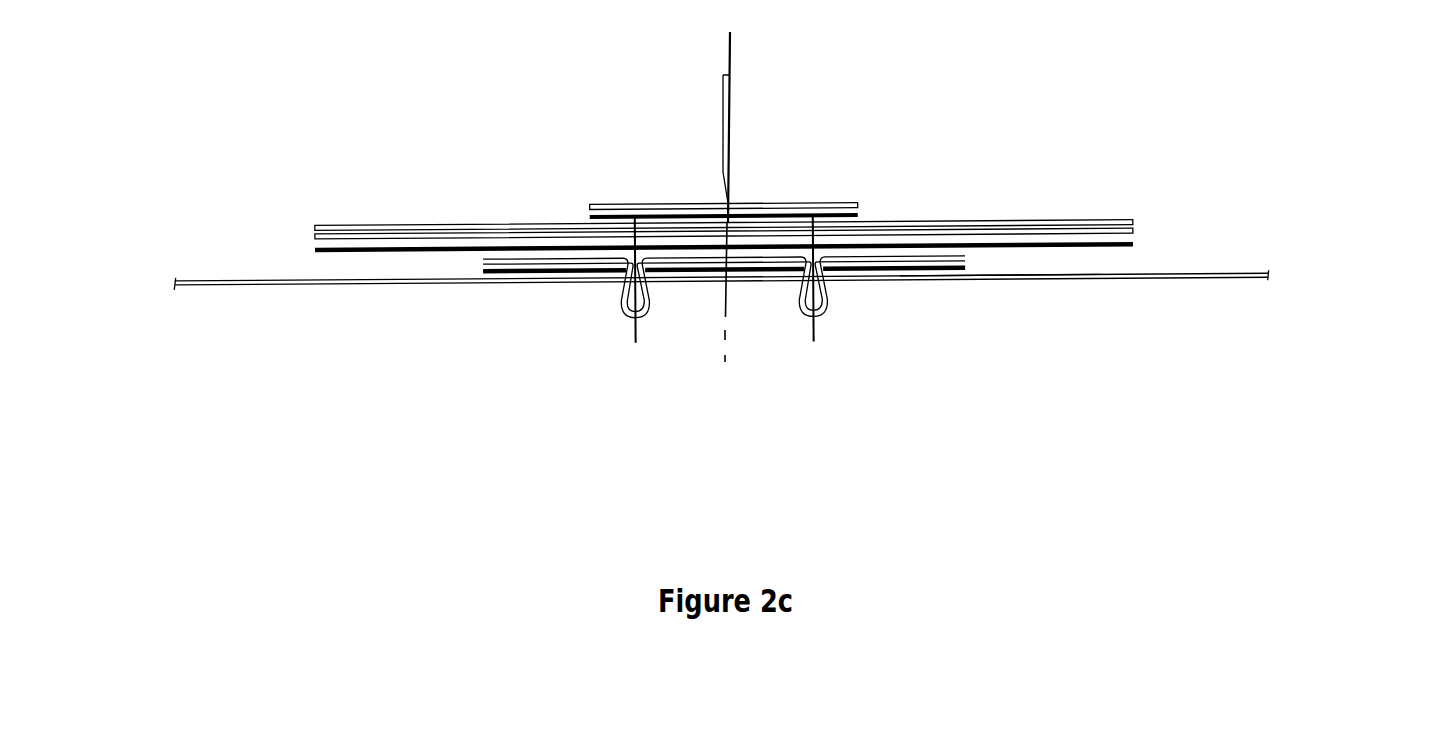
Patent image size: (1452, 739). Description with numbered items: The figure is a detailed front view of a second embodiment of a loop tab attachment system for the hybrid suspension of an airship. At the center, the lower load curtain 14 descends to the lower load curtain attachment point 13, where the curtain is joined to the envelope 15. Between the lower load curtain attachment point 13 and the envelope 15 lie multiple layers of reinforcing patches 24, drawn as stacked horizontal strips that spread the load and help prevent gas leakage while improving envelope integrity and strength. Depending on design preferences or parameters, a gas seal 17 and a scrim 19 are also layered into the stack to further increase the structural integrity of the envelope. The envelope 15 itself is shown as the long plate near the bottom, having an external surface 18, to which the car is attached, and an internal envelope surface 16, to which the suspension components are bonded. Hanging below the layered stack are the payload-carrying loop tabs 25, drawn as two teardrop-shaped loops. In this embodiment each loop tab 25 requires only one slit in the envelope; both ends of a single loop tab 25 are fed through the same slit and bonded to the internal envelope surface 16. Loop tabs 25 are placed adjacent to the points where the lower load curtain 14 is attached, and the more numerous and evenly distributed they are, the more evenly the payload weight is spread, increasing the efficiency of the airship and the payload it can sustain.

The lower load curtain attachment point 13 is at (625, 139).
The lower load curtain 14 is at (826, 197).
The envelope 15 is at (1355, 277).
The internal envelope surface 16 is at (719, 251).
The gas seal 17 is at (660, 204).
The external surface 18 is at (1010, 337).
The scrim 19 is at (702, 181).
The reinforcing patches 24 is at (826, 204).
The loop tab 25 is at (724, 335).